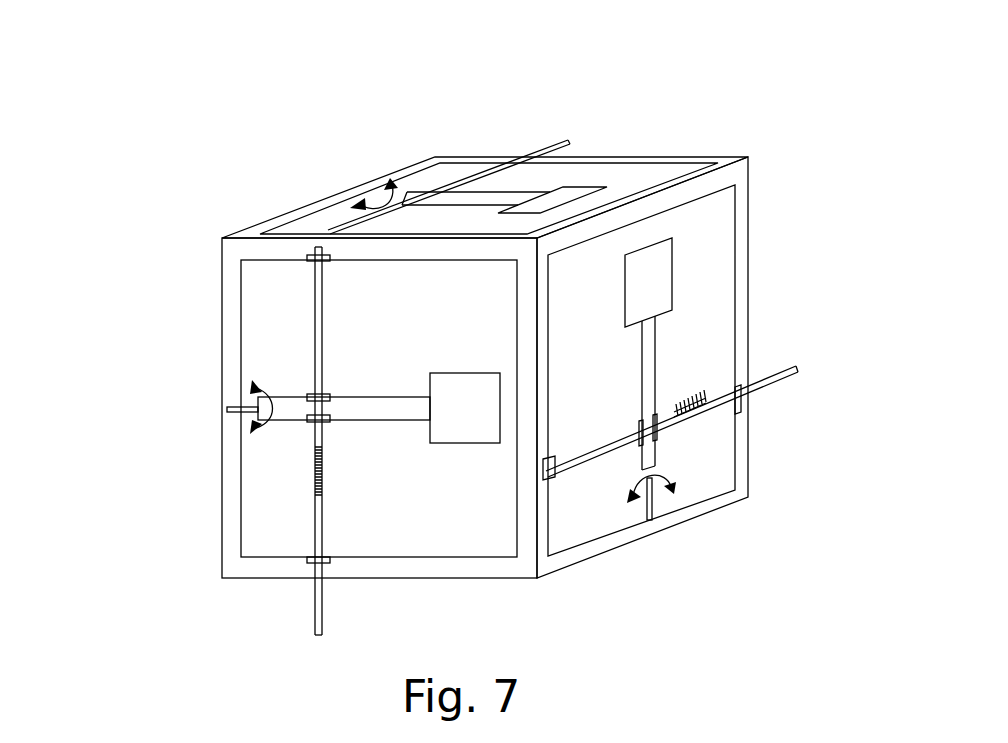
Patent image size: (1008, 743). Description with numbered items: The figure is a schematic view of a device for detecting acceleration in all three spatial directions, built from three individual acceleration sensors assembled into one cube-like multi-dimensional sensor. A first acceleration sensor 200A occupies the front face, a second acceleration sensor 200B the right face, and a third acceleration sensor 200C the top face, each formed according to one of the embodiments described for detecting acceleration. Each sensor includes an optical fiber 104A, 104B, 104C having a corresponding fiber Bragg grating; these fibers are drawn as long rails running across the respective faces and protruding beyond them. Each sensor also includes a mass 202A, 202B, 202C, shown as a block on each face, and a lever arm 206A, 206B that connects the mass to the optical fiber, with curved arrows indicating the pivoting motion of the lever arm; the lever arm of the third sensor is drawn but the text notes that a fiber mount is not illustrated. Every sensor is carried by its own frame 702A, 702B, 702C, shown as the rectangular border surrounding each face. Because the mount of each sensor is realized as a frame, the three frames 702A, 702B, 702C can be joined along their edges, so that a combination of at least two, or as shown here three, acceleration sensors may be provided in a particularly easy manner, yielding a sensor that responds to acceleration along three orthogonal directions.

The first acceleration sensor 200A is at (172, 562).
The second acceleration sensor 200B is at (768, 500).
The third acceleration sensor 200C is at (448, 110).
The optical fiber 104A is at (316, 605).
The optical fiber 104B is at (776, 378).
The optical fiber 104C is at (568, 146).
The mass 202A is at (458, 432).
The mass 202B is at (661, 268).
The mass 202C is at (600, 186).
The lever arm 206A is at (363, 402).
The lever arm 206B is at (647, 392).
The frame 702A is at (224, 332).
The frame 702B is at (746, 330).
The frame 702C is at (316, 206).